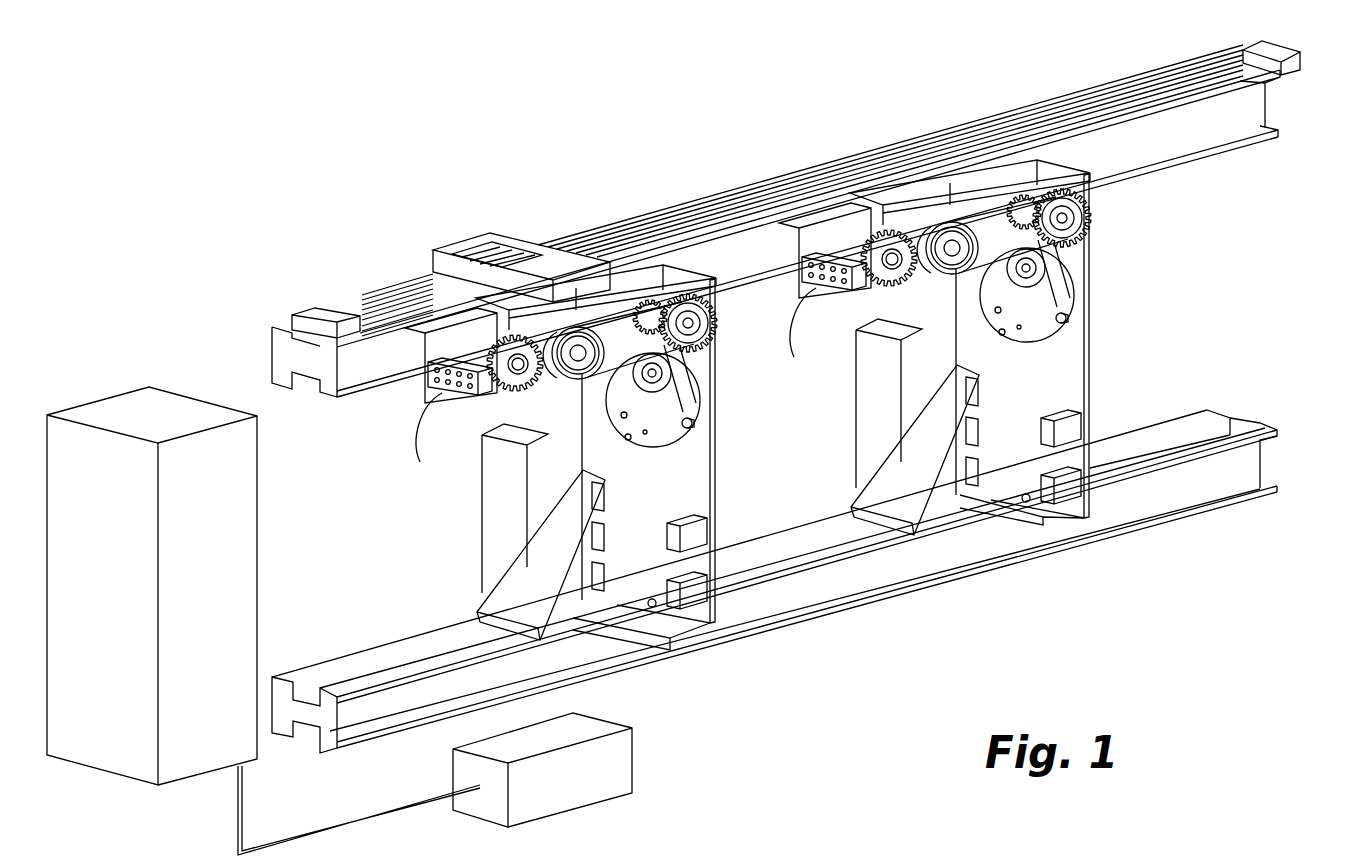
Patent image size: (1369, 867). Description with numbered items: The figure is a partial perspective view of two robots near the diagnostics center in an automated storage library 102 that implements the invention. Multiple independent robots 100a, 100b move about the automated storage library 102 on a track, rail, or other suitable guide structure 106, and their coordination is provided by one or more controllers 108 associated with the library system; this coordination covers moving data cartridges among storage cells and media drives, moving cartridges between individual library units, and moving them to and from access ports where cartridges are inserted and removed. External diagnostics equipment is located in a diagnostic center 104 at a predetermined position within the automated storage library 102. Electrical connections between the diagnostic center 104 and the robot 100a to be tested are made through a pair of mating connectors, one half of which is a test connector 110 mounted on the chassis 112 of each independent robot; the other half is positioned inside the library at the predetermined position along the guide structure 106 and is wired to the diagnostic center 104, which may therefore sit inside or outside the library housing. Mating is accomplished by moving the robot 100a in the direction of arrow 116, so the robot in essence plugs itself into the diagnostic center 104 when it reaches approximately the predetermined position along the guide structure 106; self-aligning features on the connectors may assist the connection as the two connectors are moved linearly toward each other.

The robot 100a is at (460, 505).
The robot 100b is at (1115, 282).
The automated storage library 102 is at (1313, 498).
The diagnostic center 104 is at (182, 410).
The guide structure 106 is at (1157, 137).
The controller 108 is at (633, 750).
The test connector 110 is at (466, 393).
The chassis 112 is at (690, 466).
The arrow 116 is at (403, 603).